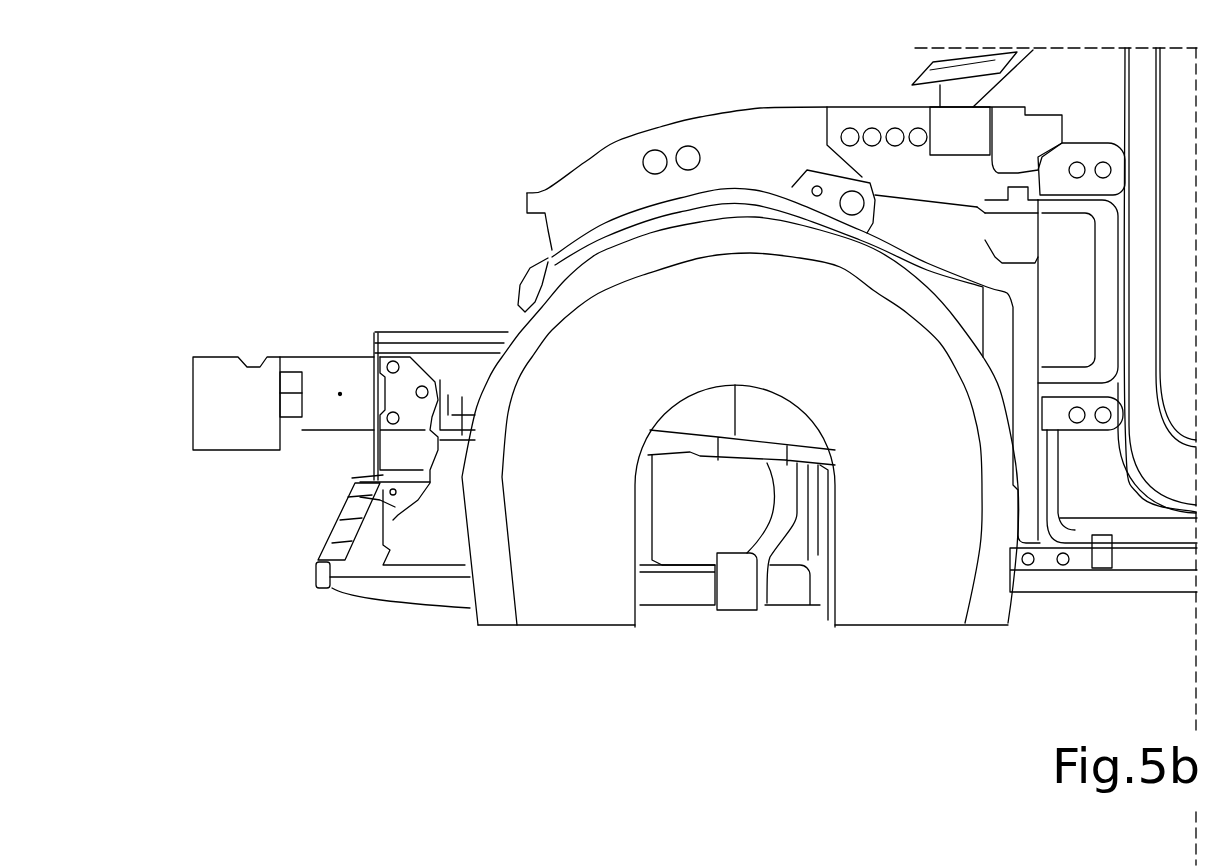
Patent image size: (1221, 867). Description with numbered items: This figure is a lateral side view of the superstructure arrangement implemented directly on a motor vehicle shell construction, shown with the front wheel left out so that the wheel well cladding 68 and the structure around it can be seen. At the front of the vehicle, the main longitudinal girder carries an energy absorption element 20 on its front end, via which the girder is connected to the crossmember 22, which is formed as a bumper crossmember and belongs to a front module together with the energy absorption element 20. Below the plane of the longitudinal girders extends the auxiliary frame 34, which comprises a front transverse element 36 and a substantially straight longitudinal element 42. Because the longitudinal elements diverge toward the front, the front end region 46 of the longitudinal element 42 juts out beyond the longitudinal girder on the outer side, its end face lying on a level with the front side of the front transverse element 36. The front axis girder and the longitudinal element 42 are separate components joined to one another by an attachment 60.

The energy absorption element 20 is at (325, 375).
The crossmember 22 is at (218, 383).
The auxiliary frame 34 is at (296, 585).
The front transverse element 36 is at (355, 513).
The longitudinal element 42 is at (670, 587).
The front end region 46 is at (357, 585).
The attachment 60 is at (735, 595).
The wheel well cladding 68 is at (912, 578).